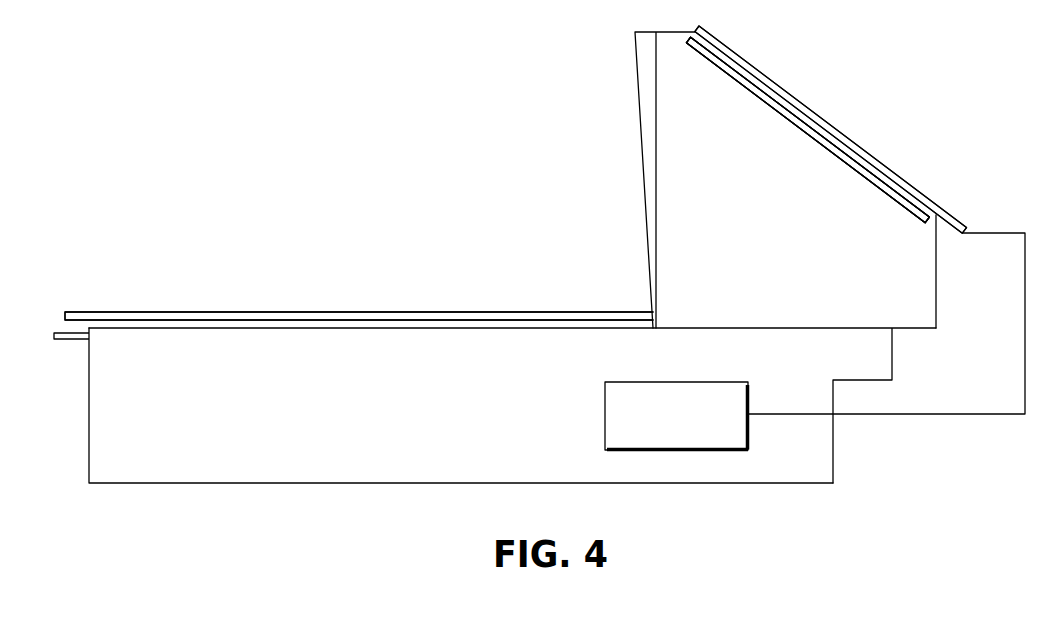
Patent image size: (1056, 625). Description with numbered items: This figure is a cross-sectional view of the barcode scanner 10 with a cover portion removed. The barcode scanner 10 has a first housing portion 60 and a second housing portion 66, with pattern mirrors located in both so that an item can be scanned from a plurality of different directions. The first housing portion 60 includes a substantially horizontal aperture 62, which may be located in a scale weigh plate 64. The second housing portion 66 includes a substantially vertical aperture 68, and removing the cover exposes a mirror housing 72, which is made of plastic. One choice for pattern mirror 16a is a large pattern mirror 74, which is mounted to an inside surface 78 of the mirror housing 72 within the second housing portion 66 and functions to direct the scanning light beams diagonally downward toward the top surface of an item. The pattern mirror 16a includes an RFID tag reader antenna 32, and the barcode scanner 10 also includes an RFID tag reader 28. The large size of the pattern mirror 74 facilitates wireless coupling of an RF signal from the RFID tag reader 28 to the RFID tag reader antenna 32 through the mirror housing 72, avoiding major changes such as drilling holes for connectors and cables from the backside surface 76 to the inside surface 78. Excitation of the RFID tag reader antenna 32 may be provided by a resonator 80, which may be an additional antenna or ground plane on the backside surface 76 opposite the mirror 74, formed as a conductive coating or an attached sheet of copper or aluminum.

The barcode scanner 10 is at (350, 96).
The pattern mirror 16a is at (792, 140).
The RFID tag reader 28 is at (605, 413).
The RFID tag reader antenna 32 is at (845, 183).
The first housing portion 60 is at (193, 464).
The substantially horizontal aperture 62 is at (372, 312).
The scale weigh plate 64 is at (153, 312).
The second housing portion 66 is at (922, 346).
The substantially vertical aperture 68 is at (640, 115).
The mirror housing 72 is at (937, 291).
The large pattern mirror 74 is at (746, 91).
The backside surface 76 is at (894, 182).
The inside surface 78 is at (907, 218).
The resonator 80 is at (821, 116).